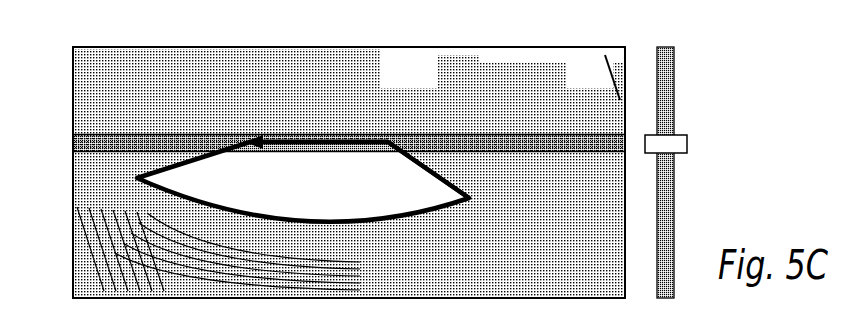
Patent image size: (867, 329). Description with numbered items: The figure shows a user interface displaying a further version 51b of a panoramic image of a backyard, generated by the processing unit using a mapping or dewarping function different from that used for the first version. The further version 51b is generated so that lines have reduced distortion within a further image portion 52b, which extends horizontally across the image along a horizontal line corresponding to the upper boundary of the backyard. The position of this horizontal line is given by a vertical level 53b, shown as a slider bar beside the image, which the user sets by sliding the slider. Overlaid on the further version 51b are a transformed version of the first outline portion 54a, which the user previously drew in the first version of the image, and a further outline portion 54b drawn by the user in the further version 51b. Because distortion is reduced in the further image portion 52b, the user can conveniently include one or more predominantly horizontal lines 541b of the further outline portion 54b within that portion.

The further version of the image 51b is at (200, 47).
The further image portion 52b is at (100, 144).
The vertical level 53b is at (688, 144).
The first outline portion 54a is at (286, 206).
The further outline portion 54b is at (287, 127).
The lines in the further image portion 541b is at (366, 141).